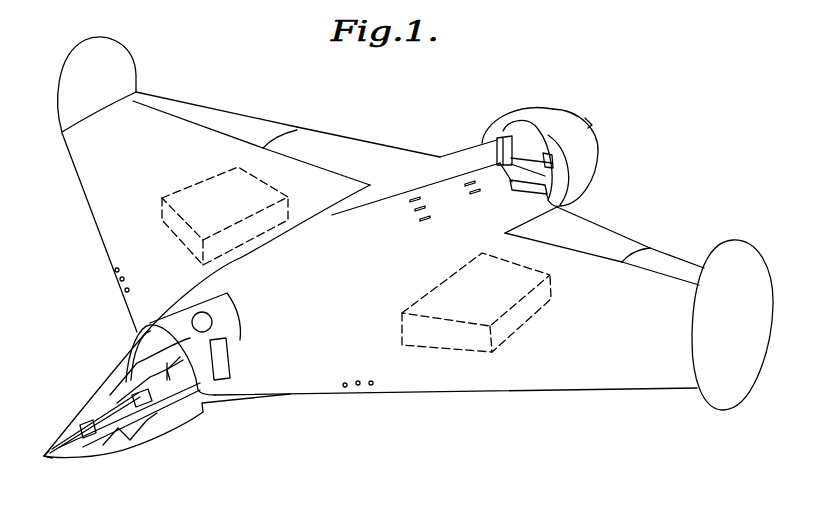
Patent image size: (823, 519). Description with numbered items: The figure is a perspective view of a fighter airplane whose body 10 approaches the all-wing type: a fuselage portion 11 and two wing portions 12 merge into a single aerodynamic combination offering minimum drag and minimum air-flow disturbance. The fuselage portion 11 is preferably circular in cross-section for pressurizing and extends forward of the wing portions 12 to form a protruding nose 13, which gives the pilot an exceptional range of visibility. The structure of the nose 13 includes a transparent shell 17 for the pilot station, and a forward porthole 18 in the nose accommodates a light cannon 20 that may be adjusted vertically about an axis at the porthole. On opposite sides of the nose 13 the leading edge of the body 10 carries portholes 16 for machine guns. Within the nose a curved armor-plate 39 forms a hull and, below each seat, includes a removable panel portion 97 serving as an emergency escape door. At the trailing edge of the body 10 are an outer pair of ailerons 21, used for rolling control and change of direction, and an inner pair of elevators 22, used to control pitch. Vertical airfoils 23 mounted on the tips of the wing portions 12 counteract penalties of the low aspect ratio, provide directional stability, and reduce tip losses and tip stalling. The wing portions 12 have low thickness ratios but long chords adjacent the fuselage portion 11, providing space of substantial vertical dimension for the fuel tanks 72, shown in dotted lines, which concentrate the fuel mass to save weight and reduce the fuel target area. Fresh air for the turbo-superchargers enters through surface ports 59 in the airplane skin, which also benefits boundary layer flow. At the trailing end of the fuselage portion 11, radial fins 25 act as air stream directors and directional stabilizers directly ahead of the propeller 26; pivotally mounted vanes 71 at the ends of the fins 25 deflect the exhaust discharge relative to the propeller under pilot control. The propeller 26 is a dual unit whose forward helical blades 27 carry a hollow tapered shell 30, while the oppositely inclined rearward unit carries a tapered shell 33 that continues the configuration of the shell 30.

The airplane body 10 is at (472, 404).
The fuselage portion 11 is at (282, 312).
The wing portions 12 is at (82, 183).
The nose 13 is at (118, 346).
The portholes 16 is at (118, 285).
The transparent shell 17 is at (85, 388).
The forward porthole 18 is at (44, 460).
The light cannon 20 is at (75, 445).
The ailerons 21 is at (243, 123).
The elevators 22 is at (348, 148).
The vertical airfoils 23 is at (122, 64).
The radial fins 25 is at (475, 147).
The propeller 26 is at (594, 106).
The helical blades 27 is at (517, 157).
The tapered shell 30 is at (567, 172).
The tapered shell 33 is at (583, 142).
The armor-plate 39 is at (167, 432).
The surface ports 59 is at (414, 194).
The vanes 71 is at (507, 150).
The fuel tanks 72 is at (162, 220).
The removable panel portion 97 is at (217, 410).